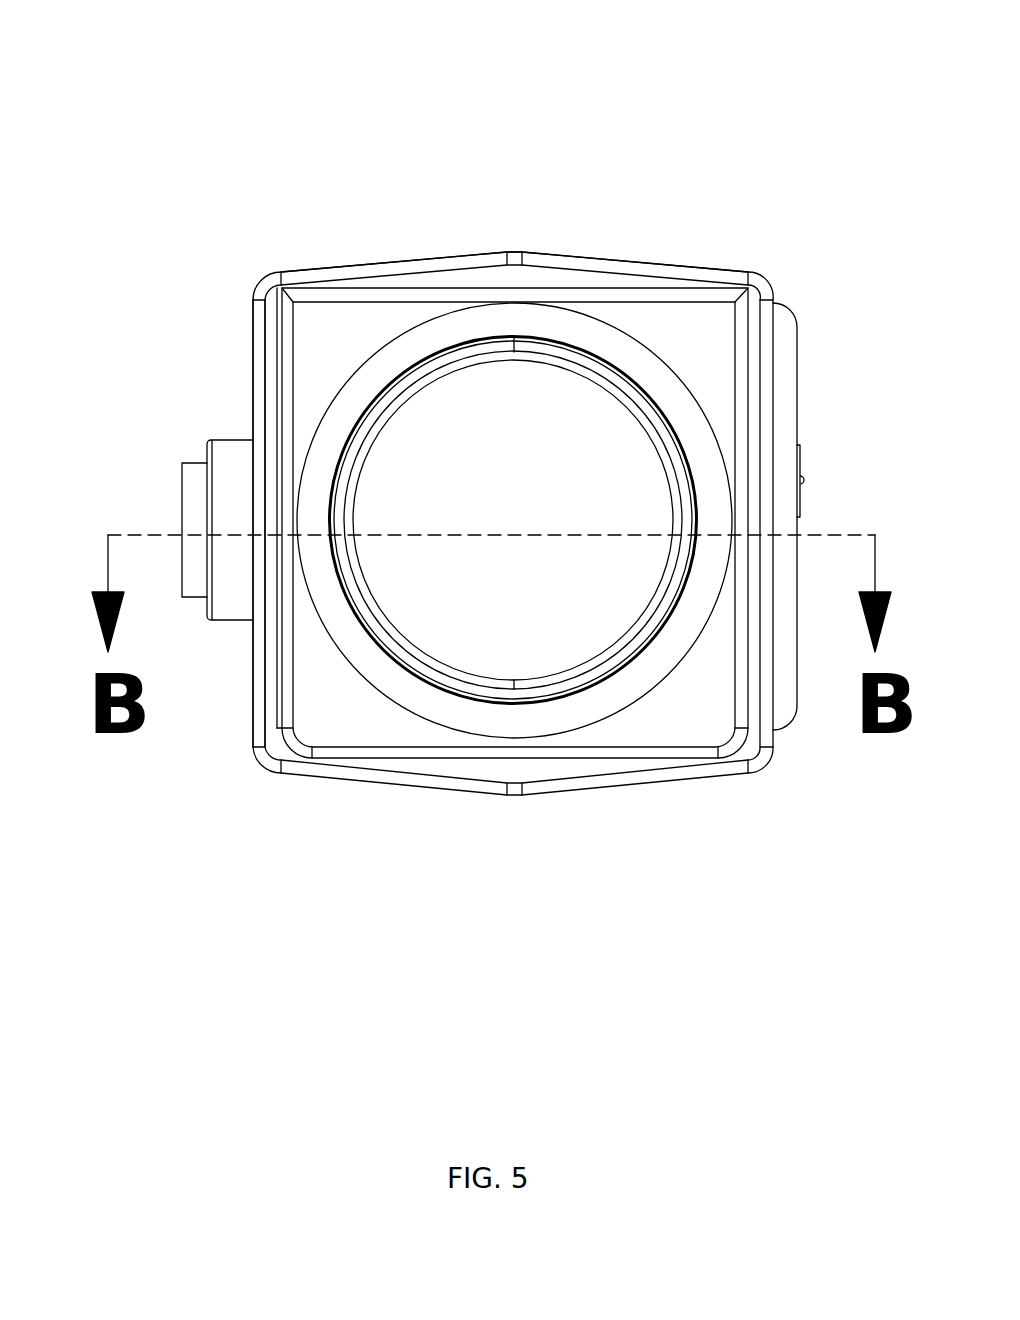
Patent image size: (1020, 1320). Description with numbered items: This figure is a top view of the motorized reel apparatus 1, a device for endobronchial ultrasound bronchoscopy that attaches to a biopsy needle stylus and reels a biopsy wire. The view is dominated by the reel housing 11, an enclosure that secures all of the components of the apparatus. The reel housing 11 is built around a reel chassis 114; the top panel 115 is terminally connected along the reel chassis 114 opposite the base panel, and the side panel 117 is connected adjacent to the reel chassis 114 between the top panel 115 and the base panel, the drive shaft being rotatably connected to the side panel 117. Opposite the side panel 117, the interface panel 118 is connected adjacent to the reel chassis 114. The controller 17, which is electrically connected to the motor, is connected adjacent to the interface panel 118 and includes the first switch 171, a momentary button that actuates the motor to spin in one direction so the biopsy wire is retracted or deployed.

The motorized reel apparatus 1 is at (468, 402).
The reel housing 11 is at (445, 155).
The reel chassis 114 is at (410, 255).
The top panel 115 is at (683, 302).
The side panel 117 is at (799, 393).
The interface panel 118 is at (252, 332).
The controller 17 is at (150, 522).
The first switch 171 is at (182, 466).